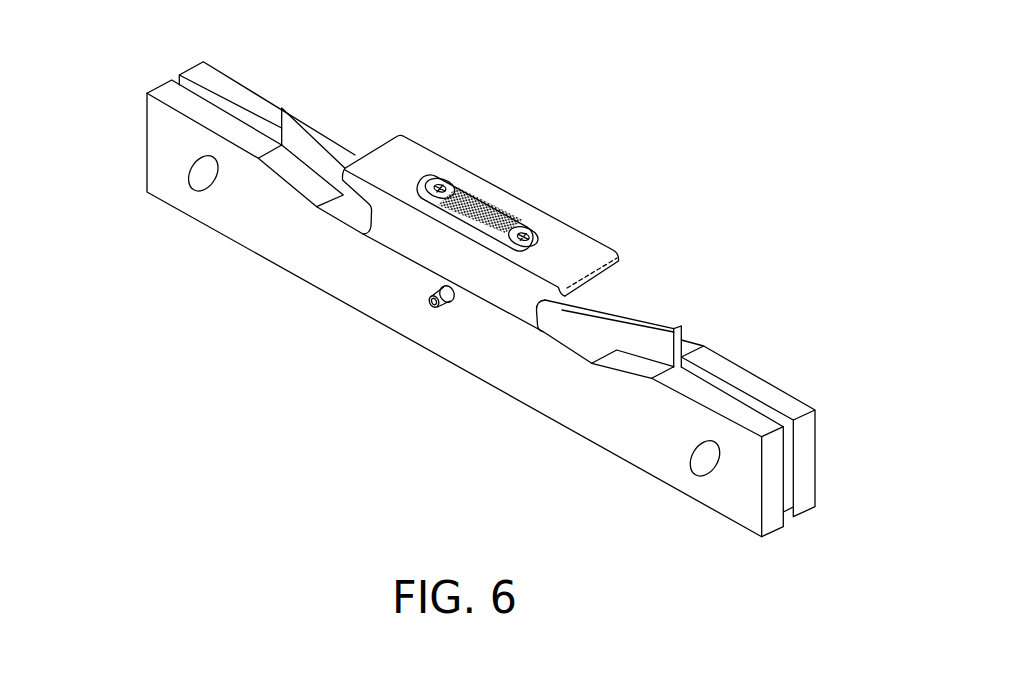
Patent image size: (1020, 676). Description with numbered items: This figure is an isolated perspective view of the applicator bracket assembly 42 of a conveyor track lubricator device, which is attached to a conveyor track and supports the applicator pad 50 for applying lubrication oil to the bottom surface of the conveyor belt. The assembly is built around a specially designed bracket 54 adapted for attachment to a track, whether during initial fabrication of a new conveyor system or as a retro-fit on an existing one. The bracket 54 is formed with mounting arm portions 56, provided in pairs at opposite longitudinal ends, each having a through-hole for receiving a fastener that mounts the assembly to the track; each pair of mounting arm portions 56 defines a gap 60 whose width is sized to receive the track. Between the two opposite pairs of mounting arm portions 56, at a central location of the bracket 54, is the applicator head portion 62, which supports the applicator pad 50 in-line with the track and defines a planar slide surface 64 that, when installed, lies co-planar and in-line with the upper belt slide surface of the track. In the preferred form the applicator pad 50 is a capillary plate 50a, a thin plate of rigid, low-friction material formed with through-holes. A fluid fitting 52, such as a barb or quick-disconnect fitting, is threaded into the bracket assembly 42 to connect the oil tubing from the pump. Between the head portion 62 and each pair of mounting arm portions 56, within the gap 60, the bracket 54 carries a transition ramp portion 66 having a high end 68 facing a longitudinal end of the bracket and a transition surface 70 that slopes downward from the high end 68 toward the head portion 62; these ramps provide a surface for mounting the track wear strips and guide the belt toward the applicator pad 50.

The applicator bracket assembly 42 is at (112, 77).
The applicator pad 50 is at (547, 231).
The capillary plate 50a is at (481, 212).
The fluid fitting 52 is at (428, 300).
The bracket 54 is at (145, 175).
The mounting arm portion 56 is at (689, 453).
The gap 60 is at (790, 505).
The applicator head portion 62 is at (406, 163).
The planar slide surface 64 is at (593, 257).
The transition ramp portion 66 is at (291, 111).
The high end 68 is at (680, 327).
The transition surface 70 is at (623, 313).